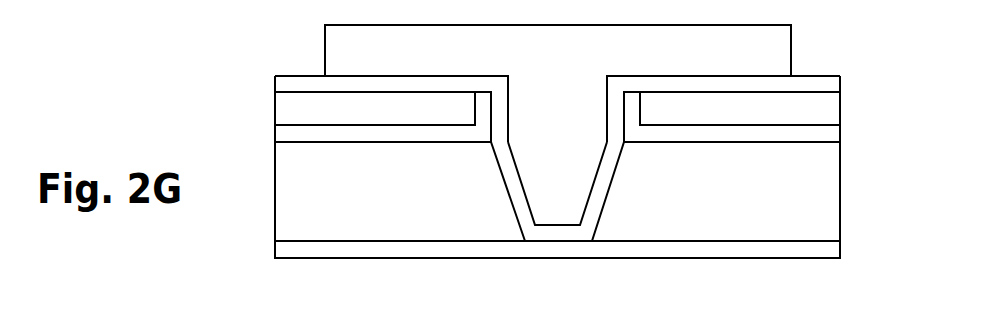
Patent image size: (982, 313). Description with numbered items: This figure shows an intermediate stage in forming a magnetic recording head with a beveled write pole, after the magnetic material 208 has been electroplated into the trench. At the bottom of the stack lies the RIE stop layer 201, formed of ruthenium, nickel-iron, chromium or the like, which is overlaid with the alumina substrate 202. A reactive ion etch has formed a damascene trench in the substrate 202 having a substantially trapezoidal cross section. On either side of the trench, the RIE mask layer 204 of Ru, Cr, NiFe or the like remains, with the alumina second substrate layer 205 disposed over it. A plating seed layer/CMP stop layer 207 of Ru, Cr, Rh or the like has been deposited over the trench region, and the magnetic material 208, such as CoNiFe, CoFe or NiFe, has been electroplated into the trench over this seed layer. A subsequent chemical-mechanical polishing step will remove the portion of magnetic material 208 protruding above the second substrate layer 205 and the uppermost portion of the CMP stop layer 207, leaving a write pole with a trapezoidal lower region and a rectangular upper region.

The RIE stop layer 201 is at (275, 250).
The substrate 202 is at (557, 191).
The RIE mask layer 204 is at (275, 132).
The second substrate layer 205 is at (557, 108).
The plating seed layer/CMP stop layer 207 is at (275, 76).
The magnetic material 208 is at (557, 173).